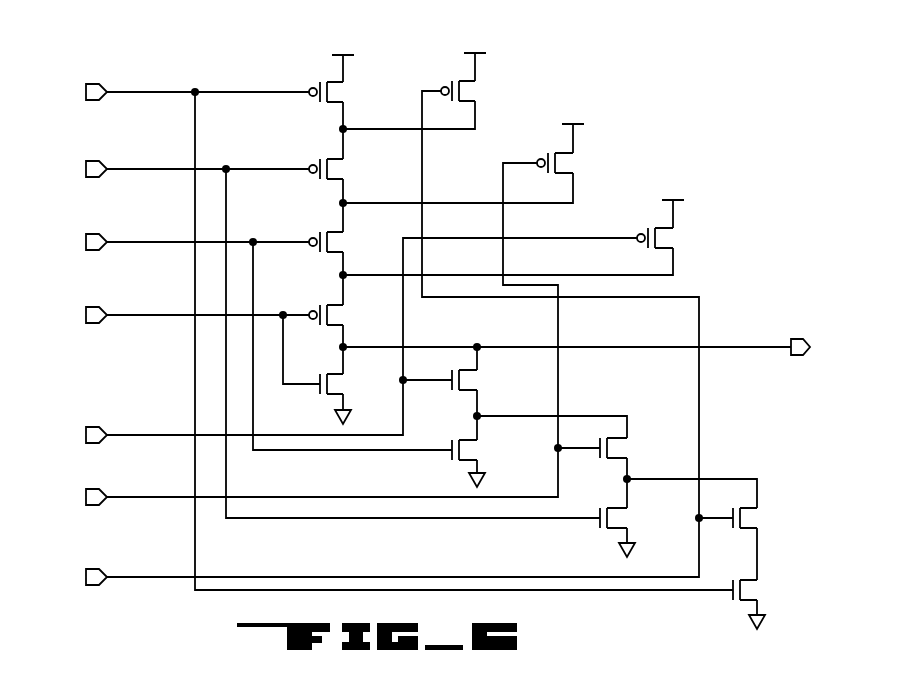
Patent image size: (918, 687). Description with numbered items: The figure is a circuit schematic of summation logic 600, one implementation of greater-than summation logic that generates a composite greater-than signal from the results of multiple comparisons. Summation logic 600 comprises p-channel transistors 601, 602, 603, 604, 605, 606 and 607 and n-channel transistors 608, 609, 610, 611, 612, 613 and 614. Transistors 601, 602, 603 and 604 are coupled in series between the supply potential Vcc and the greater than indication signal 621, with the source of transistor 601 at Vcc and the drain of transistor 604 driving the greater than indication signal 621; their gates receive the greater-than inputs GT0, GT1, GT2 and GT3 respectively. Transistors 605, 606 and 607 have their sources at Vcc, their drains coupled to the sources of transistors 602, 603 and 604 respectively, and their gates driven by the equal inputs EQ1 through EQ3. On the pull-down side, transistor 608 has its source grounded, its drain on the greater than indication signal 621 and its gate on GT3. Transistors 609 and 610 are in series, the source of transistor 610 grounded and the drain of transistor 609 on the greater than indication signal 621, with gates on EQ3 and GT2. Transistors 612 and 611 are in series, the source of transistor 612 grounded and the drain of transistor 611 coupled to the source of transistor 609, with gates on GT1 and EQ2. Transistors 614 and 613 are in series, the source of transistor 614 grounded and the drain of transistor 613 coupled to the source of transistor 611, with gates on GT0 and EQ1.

The summation logic 600 is at (265, 52).
The p-channel transistor 601 is at (338, 94).
The p-channel transistor 602 is at (338, 170).
The p-channel transistor 603 is at (338, 242).
The p-channel transistor 604 is at (338, 315).
The p-channel transistor 605 is at (468, 92).
The p-channel transistor 606 is at (566, 164).
The p-channel transistor 607 is at (666, 239).
The n-channel transistor 608 is at (338, 386).
The n-channel transistor 609 is at (472, 381).
The n-channel transistor 610 is at (472, 450).
The n-channel transistor 611 is at (621, 448).
The n-channel transistor 612 is at (621, 519).
The n-channel transistor 613 is at (752, 518).
The n-channel transistor 614 is at (752, 590).
The greater than indication signal 621 is at (768, 350).